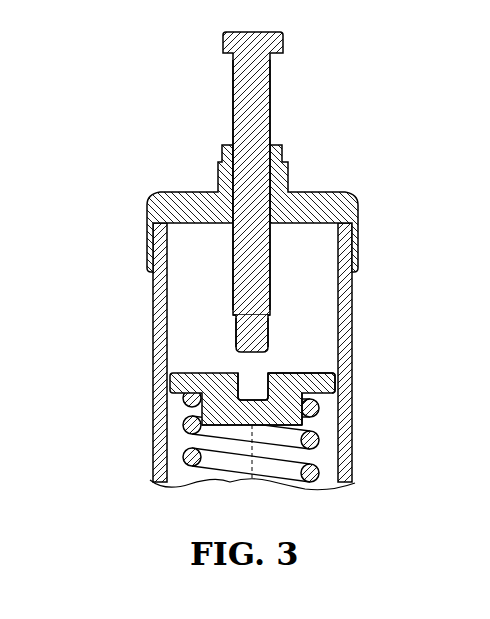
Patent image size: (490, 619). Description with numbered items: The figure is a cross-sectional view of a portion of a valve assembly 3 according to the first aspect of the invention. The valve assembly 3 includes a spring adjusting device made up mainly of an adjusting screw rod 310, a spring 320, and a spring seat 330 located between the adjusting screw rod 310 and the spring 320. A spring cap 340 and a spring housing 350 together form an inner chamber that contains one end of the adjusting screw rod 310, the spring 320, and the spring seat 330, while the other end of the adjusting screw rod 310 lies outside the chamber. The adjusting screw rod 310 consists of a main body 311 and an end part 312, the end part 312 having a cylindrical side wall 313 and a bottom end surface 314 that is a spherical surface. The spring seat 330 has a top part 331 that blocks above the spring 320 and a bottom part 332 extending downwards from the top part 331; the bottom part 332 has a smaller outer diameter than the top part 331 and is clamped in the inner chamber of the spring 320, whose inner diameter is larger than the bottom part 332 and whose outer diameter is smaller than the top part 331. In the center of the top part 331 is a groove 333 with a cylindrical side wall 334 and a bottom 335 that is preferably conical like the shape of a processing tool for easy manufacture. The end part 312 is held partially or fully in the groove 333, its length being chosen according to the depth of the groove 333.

The valve assembly 3 is at (108, 162).
The adjusting screw rod 310 is at (233, 85).
The main body 311 is at (250, 127).
The end part 312 is at (247, 342).
The cylindrical side wall 313 is at (240, 338).
The bottom end surface 314 is at (262, 353).
The spring 320 is at (292, 470).
The spring seat 330 is at (177, 395).
The top part 331 is at (327, 385).
The bottom part 332 is at (300, 420).
The groove 333 is at (305, 404).
The cylindrical side wall 334 is at (283, 373).
The bottom 335 is at (258, 393).
The spring cap 340 is at (315, 195).
The spring housing 350 is at (352, 287).